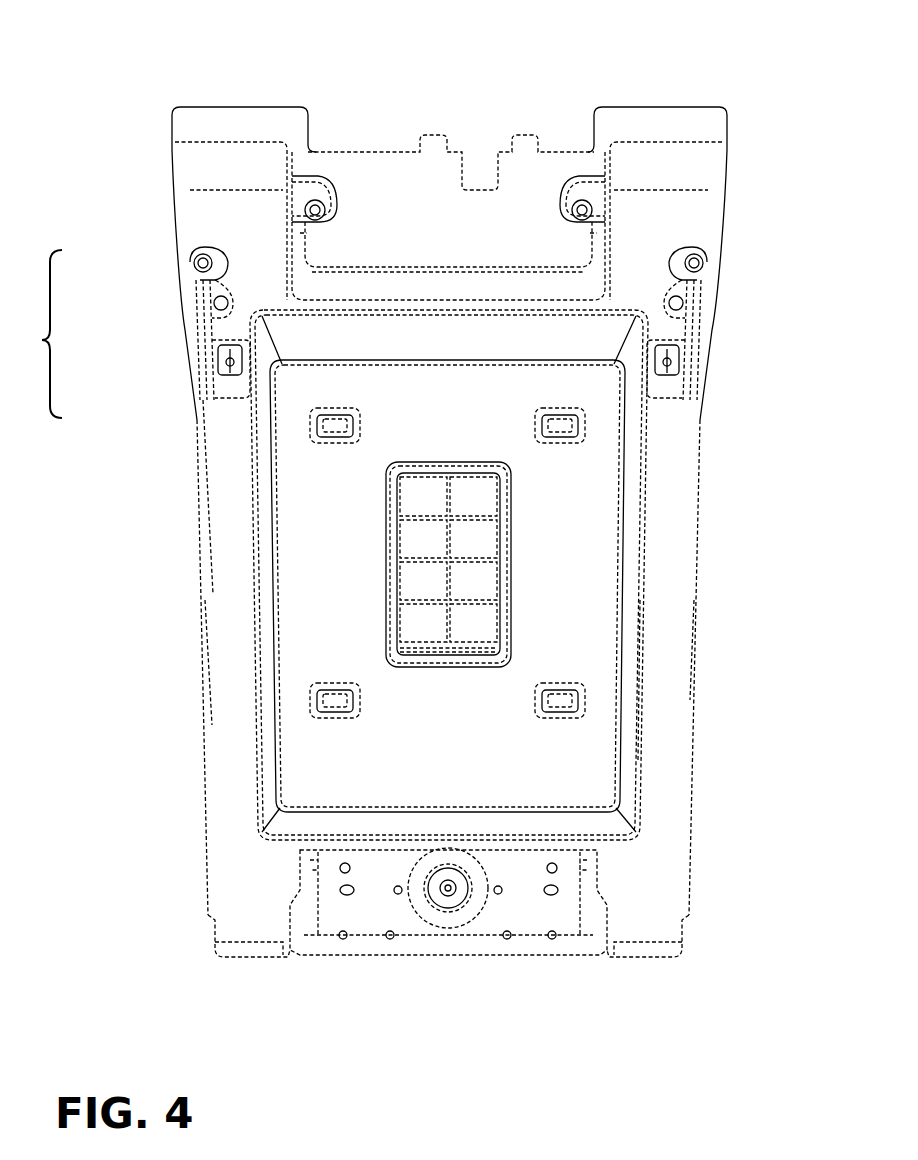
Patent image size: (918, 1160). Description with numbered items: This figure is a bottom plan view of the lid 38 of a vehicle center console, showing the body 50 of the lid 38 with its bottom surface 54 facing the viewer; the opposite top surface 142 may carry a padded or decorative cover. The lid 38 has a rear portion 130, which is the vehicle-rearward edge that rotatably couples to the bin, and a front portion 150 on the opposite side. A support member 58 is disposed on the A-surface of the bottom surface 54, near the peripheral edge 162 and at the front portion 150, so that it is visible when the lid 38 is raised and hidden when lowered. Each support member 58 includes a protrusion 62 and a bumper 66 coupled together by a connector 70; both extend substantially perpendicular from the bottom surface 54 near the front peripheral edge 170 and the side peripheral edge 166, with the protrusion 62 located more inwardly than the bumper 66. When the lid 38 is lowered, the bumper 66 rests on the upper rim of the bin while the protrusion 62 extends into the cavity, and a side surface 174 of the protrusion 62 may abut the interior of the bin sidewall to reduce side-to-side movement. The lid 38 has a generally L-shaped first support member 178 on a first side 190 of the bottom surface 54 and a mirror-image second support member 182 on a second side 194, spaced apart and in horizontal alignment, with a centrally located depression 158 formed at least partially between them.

The lid 38 is at (700, 440).
The body 50 is at (257, 888).
The bottom surface 54 is at (683, 632).
The support member 58 is at (421, 332).
The protrusion 62 is at (230, 363).
The bumper 66 is at (203, 263).
The connector 70 is at (216, 308).
The rear portion 130 is at (655, 888).
The top surface 142 is at (205, 107).
The front portion 150 is at (655, 122).
The depression 158 is at (595, 546).
The peripheral edge 162 is at (202, 725).
The side peripheral edge 166 is at (195, 470).
The front peripheral edge 170 is at (303, 107).
The side surface 174 is at (660, 380).
The first support member 178 is at (240, 380).
The second support member 182 is at (702, 262).
The first side 190 is at (215, 594).
The second side 194 is at (674, 690).